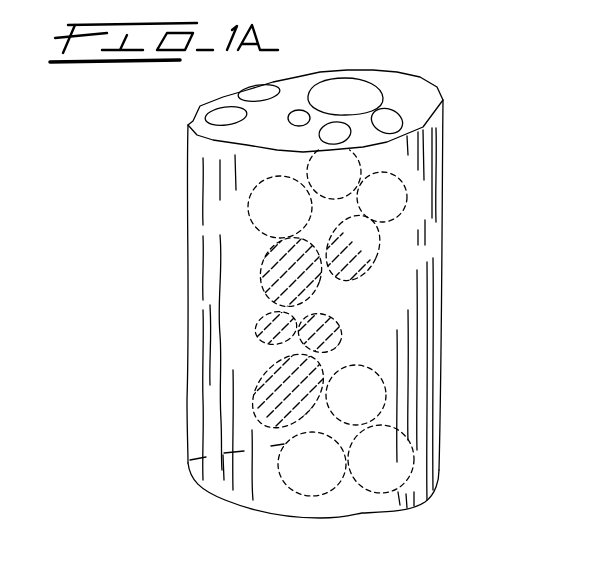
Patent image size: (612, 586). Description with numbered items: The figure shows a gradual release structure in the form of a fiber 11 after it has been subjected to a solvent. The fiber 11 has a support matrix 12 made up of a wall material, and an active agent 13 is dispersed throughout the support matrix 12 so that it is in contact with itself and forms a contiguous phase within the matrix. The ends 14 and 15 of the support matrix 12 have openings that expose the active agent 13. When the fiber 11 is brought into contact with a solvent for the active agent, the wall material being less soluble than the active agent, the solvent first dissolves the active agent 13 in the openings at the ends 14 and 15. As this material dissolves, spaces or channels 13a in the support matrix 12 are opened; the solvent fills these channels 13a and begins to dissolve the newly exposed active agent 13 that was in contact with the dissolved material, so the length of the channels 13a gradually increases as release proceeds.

The fiber 11 is at (174, 276).
The support matrix 12 is at (442, 133).
The active agent 13 is at (378, 245).
The channels 13a is at (320, 157).
The end of the support matrix 14 is at (360, 515).
The end of the support matrix 15 is at (343, 71).